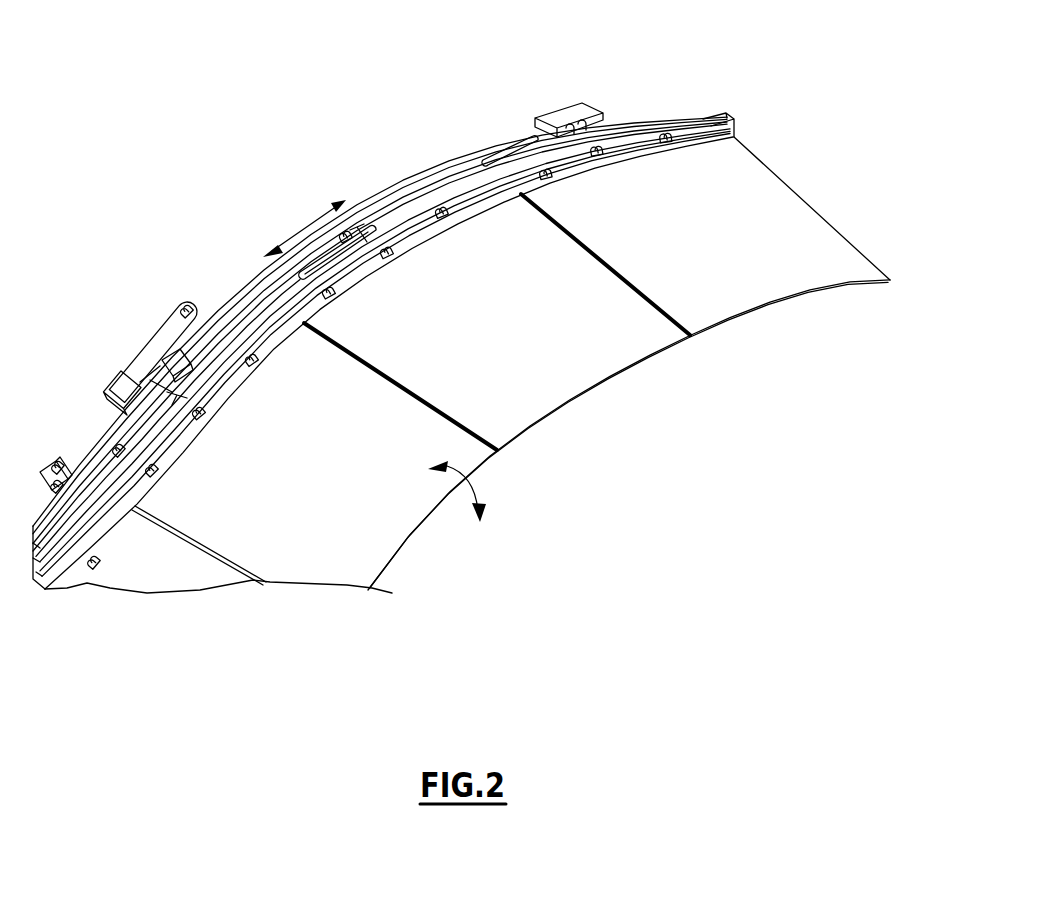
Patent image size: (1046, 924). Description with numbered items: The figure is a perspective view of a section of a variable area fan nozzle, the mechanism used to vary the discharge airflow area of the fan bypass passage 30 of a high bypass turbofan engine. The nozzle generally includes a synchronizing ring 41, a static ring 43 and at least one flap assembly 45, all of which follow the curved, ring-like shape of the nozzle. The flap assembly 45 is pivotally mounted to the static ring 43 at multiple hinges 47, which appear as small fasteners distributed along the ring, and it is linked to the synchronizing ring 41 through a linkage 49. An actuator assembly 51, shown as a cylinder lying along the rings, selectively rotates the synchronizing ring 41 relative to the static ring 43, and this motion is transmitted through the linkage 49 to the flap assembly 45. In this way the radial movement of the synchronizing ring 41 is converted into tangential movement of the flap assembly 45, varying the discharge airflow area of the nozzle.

The fan bypass passage 30 is at (746, 87).
The synchronizing ring 41 is at (487, 148).
The static ring 43 is at (672, 127).
The flap assembly 45 is at (812, 187).
The hinges 47 is at (445, 210).
The linkage 49 is at (596, 124).
The actuator assembly 51 is at (128, 383).